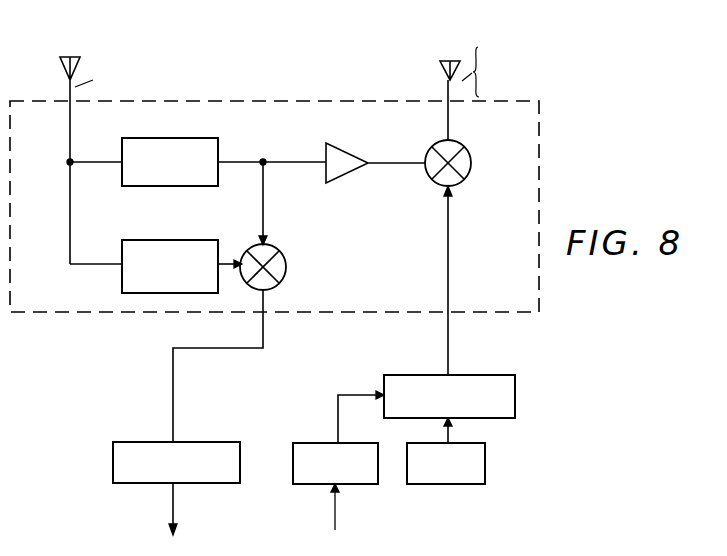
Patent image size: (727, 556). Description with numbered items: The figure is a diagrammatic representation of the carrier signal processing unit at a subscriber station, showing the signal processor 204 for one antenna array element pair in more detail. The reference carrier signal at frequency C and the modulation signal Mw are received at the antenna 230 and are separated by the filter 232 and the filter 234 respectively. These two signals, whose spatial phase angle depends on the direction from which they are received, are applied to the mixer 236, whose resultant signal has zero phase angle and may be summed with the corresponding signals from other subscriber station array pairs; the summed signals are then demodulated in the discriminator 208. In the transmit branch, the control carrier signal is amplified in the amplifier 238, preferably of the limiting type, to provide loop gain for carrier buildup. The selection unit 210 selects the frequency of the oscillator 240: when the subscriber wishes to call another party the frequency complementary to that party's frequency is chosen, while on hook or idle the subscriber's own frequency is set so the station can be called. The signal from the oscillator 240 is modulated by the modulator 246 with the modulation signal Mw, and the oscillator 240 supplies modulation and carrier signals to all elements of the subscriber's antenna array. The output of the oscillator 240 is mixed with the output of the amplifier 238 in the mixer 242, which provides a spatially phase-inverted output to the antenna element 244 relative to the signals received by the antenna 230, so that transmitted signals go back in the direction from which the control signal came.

The signal processor 204 is at (539, 162).
The discriminator 208 is at (112, 460).
The selection unit 210 is at (316, 488).
The antenna 230 is at (80, 56).
The filter 232 is at (162, 137).
The filter 234 is at (205, 237).
The mixer 236 is at (286, 268).
The amplifier 238 is at (372, 135).
The oscillator 240 is at (517, 406).
The mixer 242 is at (468, 182).
The antenna element 244 is at (440, 75).
The modulator 246 is at (487, 465).